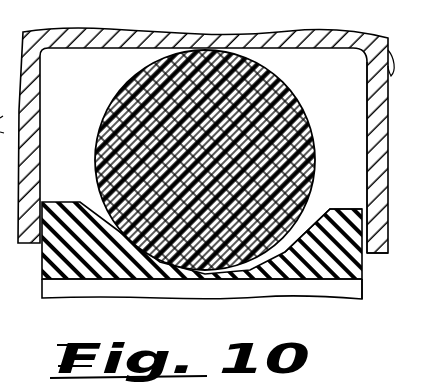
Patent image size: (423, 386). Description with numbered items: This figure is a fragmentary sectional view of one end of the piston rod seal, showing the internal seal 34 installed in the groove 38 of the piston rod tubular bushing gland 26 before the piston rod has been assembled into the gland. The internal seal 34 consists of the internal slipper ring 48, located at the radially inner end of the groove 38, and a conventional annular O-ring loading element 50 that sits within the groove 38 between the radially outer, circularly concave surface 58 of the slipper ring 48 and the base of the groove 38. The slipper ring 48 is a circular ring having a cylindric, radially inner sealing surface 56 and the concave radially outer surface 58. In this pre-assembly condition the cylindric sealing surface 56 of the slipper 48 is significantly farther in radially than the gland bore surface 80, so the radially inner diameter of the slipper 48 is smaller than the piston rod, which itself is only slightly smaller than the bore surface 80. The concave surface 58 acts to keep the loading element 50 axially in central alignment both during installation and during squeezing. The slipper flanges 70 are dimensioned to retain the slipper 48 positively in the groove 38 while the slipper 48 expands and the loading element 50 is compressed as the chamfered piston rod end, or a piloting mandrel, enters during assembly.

The piston rod tubular bushing gland 26 is at (370, 69).
The groove 38 is at (369, 113).
The O-ring loading element 50 is at (262, 80).
The slipper flanges 70 is at (336, 221).
The gland bore surface 80 is at (377, 256).
The internal seal 34 is at (342, 305).
The internal slipper ring 48 is at (47, 274).
The cylindric sealing surface 56 is at (108, 279).
The circularly concave surface 58 is at (283, 274).